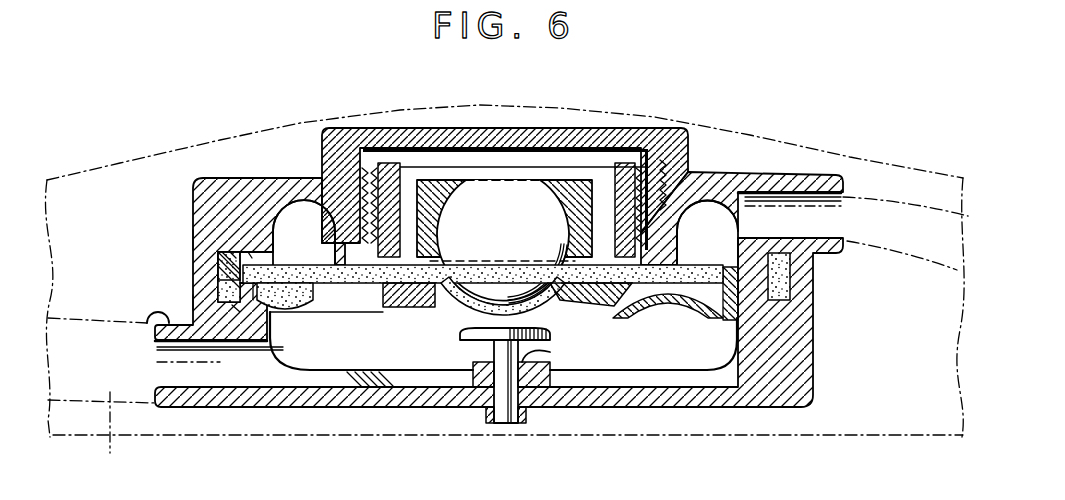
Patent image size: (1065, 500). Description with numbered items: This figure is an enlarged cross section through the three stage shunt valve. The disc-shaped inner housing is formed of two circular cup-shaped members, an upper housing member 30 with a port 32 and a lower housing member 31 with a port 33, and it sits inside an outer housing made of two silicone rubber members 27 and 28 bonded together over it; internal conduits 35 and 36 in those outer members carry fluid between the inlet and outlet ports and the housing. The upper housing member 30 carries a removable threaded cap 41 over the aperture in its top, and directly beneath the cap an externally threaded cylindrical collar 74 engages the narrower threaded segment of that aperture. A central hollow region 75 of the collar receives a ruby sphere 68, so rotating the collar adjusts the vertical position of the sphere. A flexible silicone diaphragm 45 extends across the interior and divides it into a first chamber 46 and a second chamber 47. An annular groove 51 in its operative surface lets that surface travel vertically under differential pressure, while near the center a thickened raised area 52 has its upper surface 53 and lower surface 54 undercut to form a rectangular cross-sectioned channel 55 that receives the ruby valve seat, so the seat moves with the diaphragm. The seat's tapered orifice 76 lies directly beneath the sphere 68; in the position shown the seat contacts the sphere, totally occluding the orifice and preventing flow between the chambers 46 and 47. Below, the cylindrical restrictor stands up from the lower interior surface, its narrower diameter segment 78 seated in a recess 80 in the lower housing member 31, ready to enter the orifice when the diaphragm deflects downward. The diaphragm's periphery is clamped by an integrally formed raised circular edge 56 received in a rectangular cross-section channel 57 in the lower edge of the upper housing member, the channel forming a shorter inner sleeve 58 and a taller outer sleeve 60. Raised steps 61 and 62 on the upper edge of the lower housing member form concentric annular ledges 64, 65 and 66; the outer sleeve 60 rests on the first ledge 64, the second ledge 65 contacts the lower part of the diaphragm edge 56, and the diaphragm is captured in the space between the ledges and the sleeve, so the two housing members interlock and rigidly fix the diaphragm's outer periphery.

The outer housing member 27 is at (675, 115).
The outer housing member 28 is at (97, 177).
The upper housing member 30 is at (772, 175).
The lower housing member 31 is at (775, 408).
The port 32 is at (815, 228).
The port 33 is at (187, 380).
The internal conduit 35 is at (883, 200).
The internal conduit 36 is at (109, 436).
The removable cap 41 is at (333, 128).
The diaphragm 45 is at (695, 260).
The first interior chamber 46 is at (318, 242).
The second interior chamber 47 is at (348, 349).
The annular groove 51 is at (680, 293).
The raised area 52 is at (640, 307).
The upper surface of raised area 53 is at (415, 250).
The lower surface of raised area 54 is at (418, 292).
The channel 55 is at (393, 300).
The raised circular edge 56 is at (193, 238).
The channel 57 is at (234, 255).
The inner sleeve 58 is at (193, 300).
The outer sleeve 60 is at (250, 255).
The raised step 61 is at (232, 312).
The raised step 62 is at (253, 290).
The annular ledge 64 is at (147, 323).
The annular ledge 65 is at (218, 282).
The annular ledge 66 is at (218, 260).
The sphere 68 is at (492, 247).
The cylindrical collar 74 is at (383, 165).
The central hollow region 75 is at (468, 200).
The orifice 76 is at (550, 265).
The narrower diameter segment 78 is at (506, 424).
The recess 80 is at (542, 358).